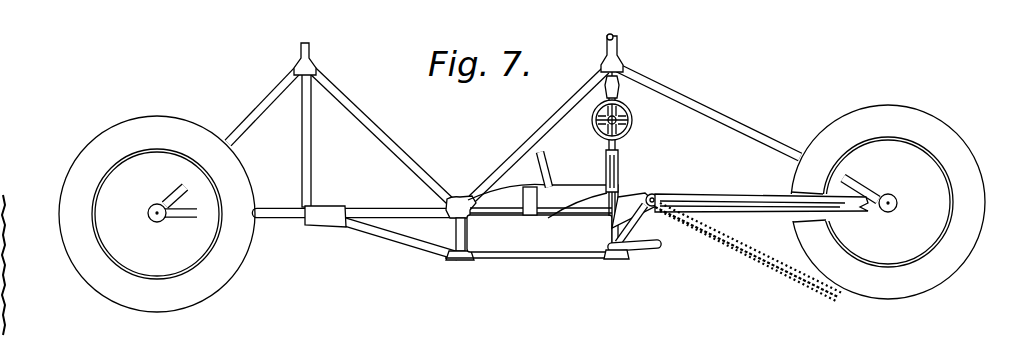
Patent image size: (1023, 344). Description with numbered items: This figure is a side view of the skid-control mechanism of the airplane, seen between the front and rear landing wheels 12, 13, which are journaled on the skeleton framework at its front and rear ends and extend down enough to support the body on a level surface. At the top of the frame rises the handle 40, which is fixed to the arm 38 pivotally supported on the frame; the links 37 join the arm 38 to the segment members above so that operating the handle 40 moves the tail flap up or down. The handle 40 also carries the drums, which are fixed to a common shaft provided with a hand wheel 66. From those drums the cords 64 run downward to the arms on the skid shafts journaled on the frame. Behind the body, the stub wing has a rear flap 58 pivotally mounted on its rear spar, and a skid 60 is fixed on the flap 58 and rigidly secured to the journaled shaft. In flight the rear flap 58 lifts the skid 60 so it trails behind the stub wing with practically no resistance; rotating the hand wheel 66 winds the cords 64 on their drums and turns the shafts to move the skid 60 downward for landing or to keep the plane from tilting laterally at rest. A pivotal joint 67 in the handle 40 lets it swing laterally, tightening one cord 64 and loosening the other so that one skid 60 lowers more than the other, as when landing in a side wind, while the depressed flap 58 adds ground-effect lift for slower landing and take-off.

The landing wheel 12 is at (227, 272).
The landing wheel 13 is at (945, 267).
The link 37 is at (546, 153).
The arm 38 is at (580, 185).
The handle 40 is at (620, 87).
The hand wheel 66 is at (632, 122).
The pivotal joint 67 is at (567, 218).
The cord 64 is at (603, 214).
The rear flap 58 is at (700, 200).
The skid 60 is at (757, 203).